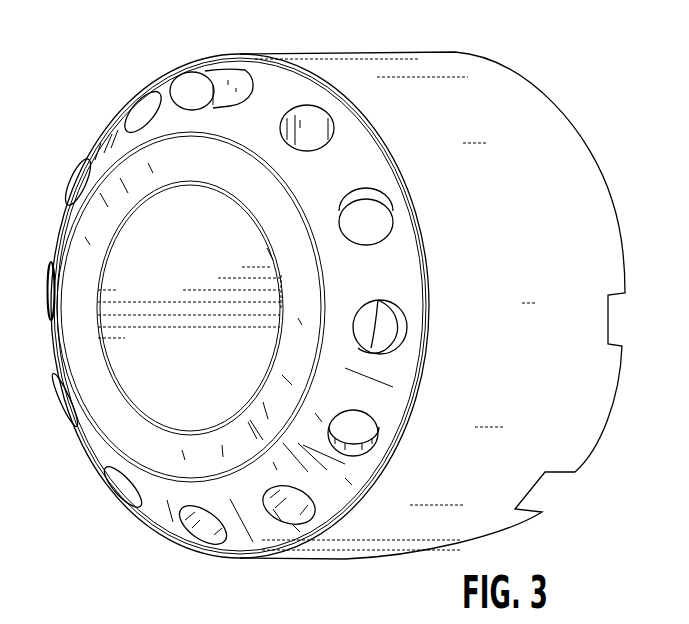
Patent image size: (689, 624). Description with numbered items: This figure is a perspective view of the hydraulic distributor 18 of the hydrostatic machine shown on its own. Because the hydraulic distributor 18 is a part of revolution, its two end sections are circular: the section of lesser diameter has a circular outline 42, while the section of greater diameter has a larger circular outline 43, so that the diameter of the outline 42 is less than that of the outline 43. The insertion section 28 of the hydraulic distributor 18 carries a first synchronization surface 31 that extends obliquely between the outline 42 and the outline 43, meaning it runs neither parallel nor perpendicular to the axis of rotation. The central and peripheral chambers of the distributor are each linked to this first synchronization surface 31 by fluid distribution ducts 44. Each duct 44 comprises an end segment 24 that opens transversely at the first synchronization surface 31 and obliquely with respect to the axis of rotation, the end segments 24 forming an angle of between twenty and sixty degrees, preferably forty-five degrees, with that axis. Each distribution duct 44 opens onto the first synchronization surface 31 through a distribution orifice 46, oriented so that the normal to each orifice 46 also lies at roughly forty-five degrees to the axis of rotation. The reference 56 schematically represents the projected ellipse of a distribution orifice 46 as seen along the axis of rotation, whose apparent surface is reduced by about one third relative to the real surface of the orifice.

The hydraulic distributor 18 is at (558, 163).
The end segment 24 is at (353, 451).
The insertion section 28 is at (402, 168).
The first synchronization surface 31 is at (273, 82).
The outline 42 is at (213, 133).
The outline 43 is at (320, 80).
The fluid distribution duct 44 is at (200, 518).
The distribution orifice 46 is at (384, 242).
The projection of the ellipse 56 is at (188, 88).